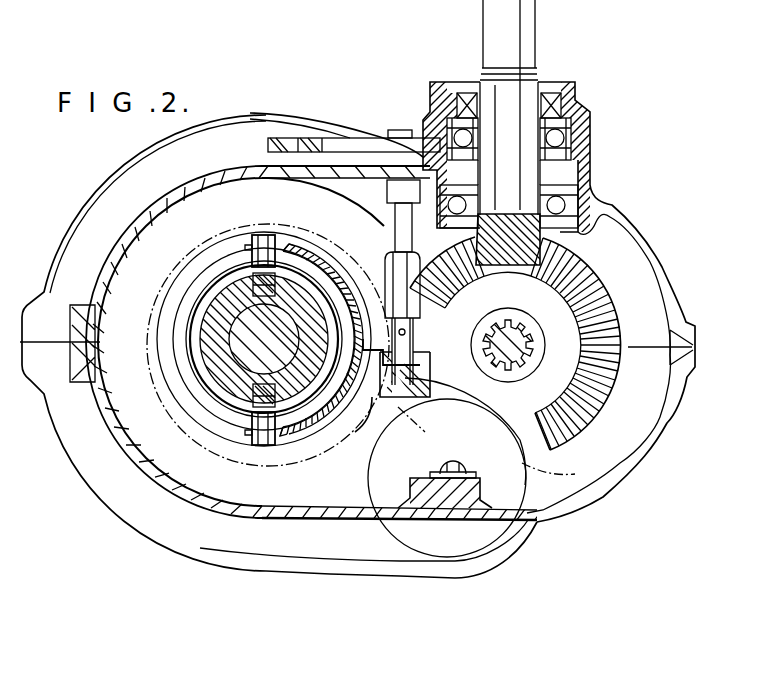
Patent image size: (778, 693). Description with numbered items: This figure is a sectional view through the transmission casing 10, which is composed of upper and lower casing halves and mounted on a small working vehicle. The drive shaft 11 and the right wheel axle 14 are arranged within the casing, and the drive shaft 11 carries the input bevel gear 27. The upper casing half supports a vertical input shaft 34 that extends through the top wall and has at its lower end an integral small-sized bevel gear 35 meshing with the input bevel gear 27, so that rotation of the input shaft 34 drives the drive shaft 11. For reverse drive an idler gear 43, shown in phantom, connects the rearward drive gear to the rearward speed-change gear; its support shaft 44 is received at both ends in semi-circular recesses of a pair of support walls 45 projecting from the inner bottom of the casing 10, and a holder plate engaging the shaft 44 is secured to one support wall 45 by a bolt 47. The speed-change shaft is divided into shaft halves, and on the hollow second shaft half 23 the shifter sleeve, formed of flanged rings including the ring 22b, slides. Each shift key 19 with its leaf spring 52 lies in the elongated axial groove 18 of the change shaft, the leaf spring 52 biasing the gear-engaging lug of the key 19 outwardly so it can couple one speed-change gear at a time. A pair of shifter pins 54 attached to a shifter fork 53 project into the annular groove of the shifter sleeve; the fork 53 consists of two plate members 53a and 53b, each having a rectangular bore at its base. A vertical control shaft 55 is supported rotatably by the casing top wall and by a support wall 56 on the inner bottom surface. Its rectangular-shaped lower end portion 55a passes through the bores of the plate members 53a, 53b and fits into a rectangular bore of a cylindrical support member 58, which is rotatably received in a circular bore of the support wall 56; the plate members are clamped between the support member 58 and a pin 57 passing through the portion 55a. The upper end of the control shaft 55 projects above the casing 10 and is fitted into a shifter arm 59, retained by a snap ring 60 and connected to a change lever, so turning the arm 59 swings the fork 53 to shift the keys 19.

The transmission casing 10 is at (625, 465).
The drive shaft 11 is at (515, 352).
The right wheel axle 14 is at (160, 420).
The elongated axial groove 18 is at (275, 312).
The shift key 19 is at (235, 245).
The flanged ring 22b is at (167, 395).
The second shaft half 23 is at (214, 306).
The input bevel gear 27 is at (597, 286).
The input shaft 34 is at (510, 52).
The small-sized bevel gear 35 is at (592, 212).
The idler gear 43 is at (552, 472).
The support shaft 44 is at (462, 466).
The support walls 45 is at (533, 520).
The bolt 47 is at (445, 460).
The leaf spring 52 is at (260, 300).
The shifter fork 53 is at (338, 263).
The plate member 53a is at (292, 233).
The plate member 53b is at (308, 438).
The shifter pins 54 is at (260, 235).
The control shaft 55 is at (397, 207).
The rectangular-shaped lower end portion 55a is at (415, 366).
The support wall 56 is at (373, 398).
The pin 57 is at (398, 336).
The cylindrical support member 58 is at (485, 397).
The shifter arm 59 is at (345, 138).
The snap ring 60 is at (393, 130).